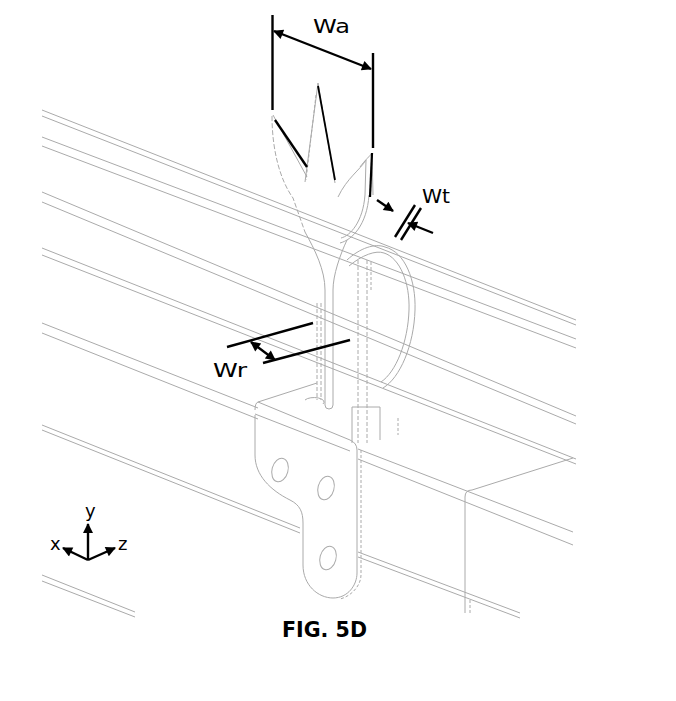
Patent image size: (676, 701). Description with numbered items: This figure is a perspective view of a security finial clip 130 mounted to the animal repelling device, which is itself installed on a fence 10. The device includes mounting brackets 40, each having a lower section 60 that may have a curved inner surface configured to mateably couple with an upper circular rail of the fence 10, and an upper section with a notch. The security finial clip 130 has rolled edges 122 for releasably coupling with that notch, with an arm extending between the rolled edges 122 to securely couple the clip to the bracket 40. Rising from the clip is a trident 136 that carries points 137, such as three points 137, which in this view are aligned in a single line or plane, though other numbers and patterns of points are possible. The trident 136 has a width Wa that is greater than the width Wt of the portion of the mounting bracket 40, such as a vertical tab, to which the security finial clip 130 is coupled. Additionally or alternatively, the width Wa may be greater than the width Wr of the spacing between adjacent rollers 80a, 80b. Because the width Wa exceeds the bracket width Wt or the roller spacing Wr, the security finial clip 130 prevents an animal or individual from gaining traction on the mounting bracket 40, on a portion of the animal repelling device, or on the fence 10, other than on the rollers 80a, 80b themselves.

The fence 10 is at (100, 414).
The mounting bracket 40 is at (395, 415).
The lower section of mounting bracket 60 is at (258, 438).
The roller 80a is at (100, 196).
The roller 80b is at (418, 303).
The rolled edges 122 is at (375, 422).
The security finial clip 130 is at (320, 255).
The trident 136 is at (347, 224).
The points 137 is at (275, 134).